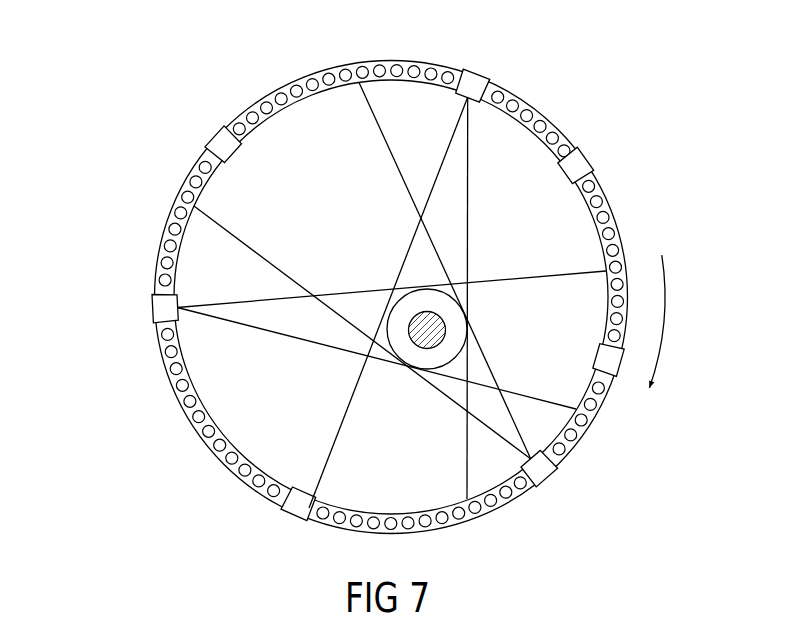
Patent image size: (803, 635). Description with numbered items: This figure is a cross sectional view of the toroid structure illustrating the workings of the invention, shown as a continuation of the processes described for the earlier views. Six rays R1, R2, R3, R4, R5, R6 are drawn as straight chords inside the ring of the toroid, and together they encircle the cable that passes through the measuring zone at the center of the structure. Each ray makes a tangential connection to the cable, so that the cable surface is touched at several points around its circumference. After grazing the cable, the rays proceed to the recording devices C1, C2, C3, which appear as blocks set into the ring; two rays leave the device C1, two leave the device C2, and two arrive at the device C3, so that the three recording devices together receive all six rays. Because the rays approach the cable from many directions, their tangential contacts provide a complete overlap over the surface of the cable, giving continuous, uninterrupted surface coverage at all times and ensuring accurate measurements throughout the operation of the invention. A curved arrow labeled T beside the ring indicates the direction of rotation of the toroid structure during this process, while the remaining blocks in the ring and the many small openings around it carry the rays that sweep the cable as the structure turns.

The recording device C1 is at (125, 326).
The recording device C2 is at (503, 61).
The recording device C3 is at (573, 488).
The ray R1 is at (391, 264).
The ray R2 is at (378, 359).
The ray R3 is at (426, 298).
The ray R4 is at (370, 302).
The ray R5 is at (362, 325).
The ray R6 is at (419, 271).
The rotation direction T is at (658, 301).